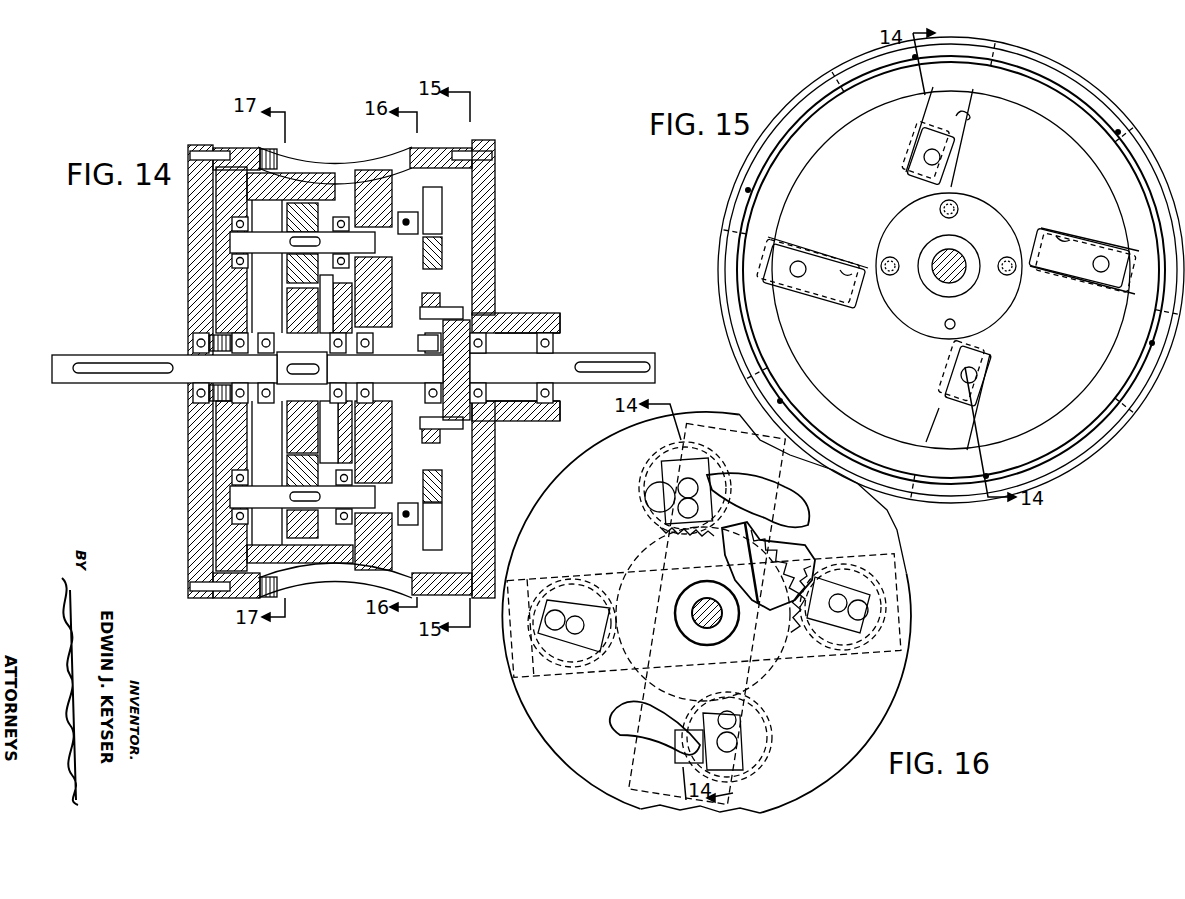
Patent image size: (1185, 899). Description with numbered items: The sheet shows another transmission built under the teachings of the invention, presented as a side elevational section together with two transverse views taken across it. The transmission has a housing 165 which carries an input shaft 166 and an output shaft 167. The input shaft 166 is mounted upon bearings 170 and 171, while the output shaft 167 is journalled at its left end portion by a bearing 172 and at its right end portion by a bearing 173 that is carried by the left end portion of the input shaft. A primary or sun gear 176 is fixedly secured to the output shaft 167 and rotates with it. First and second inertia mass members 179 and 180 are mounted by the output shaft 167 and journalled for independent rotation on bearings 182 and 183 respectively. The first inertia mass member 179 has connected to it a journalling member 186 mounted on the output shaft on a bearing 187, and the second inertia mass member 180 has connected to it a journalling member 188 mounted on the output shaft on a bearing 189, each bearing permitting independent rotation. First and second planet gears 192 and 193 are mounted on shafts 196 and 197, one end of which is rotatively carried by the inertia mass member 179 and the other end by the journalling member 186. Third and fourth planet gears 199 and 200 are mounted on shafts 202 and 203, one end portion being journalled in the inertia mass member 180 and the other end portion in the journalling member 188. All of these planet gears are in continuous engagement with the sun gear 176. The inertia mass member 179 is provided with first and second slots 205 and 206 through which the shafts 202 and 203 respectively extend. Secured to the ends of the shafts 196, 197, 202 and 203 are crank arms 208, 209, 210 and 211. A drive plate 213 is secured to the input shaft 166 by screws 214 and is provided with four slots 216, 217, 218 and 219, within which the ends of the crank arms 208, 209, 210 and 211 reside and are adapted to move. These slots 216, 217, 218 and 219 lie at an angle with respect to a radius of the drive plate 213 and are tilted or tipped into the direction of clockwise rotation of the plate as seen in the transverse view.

In FIG. 14, the housing 165 is at (483, 237).
In FIG. 15, the housing 165 is at (1112, 107).
In FIG. 14, the input shaft 166 is at (595, 352).
In FIG. 14, the output shaft 167 is at (120, 355).
In FIG. 14, the bearing 170 is at (545, 320).
In FIG. 14, the bearing 171 is at (496, 314).
In FIG. 14, the bearing 172 is at (205, 336).
In FIG. 14, the bearing 173 is at (422, 352).
In FIG. 14, the sun gear 176 is at (274, 328).
In FIG. 16, the sun gear 176 is at (767, 550).
In FIG. 14, the first inertia mass member 179 is at (375, 200).
In FIG. 16, the first inertia mass member 179 is at (550, 741).
In FIG. 14, the second inertia mass member 180 is at (238, 178).
In FIG. 14, the bearing 182 is at (398, 370).
In FIG. 14, the bearing 183 is at (198, 352).
In FIG. 14, the journalling member 186 is at (232, 290).
In FIG. 14, the bearing 187 is at (240, 362).
In FIG. 14, the journalling member 188 is at (340, 180).
In FIG. 14, the bearing 189 is at (355, 415).
In FIG. 16, the first planet gear 192 is at (580, 573).
In FIG. 16, the second planet gear 193 is at (793, 543).
In FIG. 16, the shaft 196 is at (572, 630).
In FIG. 16, the shaft 197 is at (837, 613).
In FIG. 14, the third planet gear 199 is at (300, 212).
In FIG. 16, the third planet gear 199 is at (713, 463).
In FIG. 14, the fourth planet gear 200 is at (285, 478).
In FIG. 16, the fourth planet gear 200 is at (760, 715).
In FIG. 14, the shaft 202 is at (240, 243).
In FIG. 16, the shaft 202 is at (683, 488).
In FIG. 14, the shaft 203 is at (238, 520).
In FIG. 16, the shaft 203 is at (733, 740).
In FIG. 14, the first slot 205 is at (395, 196).
In FIG. 16, the first slot 205 is at (772, 492).
In FIG. 14, the second slot 206 is at (375, 568).
In FIG. 16, the second slot 206 is at (655, 745).
In FIG. 15, the crank arm 208 is at (798, 277).
In FIG. 16, the crank arm 208 is at (553, 618).
In FIG. 15, the crank arm 209 is at (1101, 272).
In FIG. 16, the crank arm 209 is at (857, 613).
In FIG. 15, the crank arm 210 is at (941, 157).
In FIG. 16, the crank arm 210 is at (687, 508).
In FIG. 15, the crank arm 211 is at (977, 375).
In FIG. 16, the crank arm 211 is at (720, 717).
In FIG. 14, the drive plate 213 is at (437, 216).
In FIG. 15, the drive plate 213 is at (1061, 397).
In FIG. 14, the screws 214 is at (460, 295).
In FIG. 15, the screws 214 is at (943, 209).
In FIG. 15, the slot 216 is at (845, 273).
In FIG. 15, the slot 217 is at (1061, 234).
In FIG. 15, the slot 218 is at (967, 115).
In FIG. 15, the slot 219 is at (936, 416).